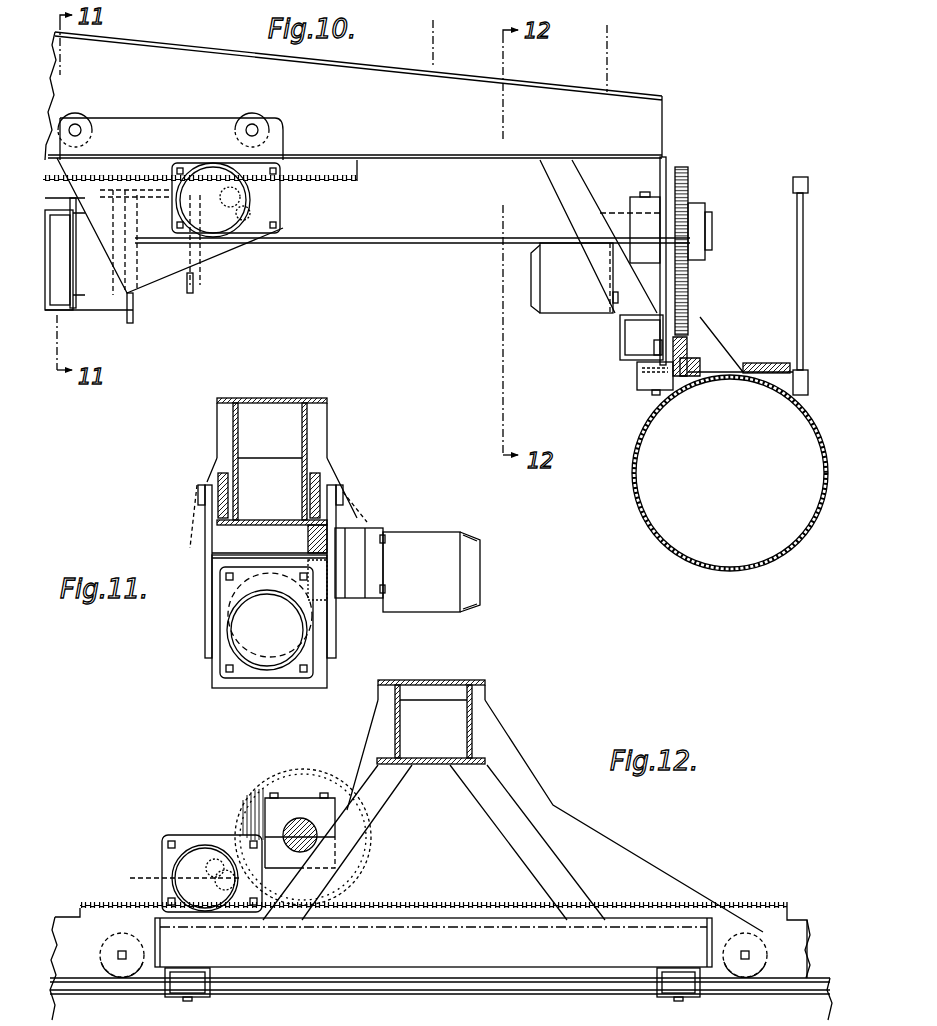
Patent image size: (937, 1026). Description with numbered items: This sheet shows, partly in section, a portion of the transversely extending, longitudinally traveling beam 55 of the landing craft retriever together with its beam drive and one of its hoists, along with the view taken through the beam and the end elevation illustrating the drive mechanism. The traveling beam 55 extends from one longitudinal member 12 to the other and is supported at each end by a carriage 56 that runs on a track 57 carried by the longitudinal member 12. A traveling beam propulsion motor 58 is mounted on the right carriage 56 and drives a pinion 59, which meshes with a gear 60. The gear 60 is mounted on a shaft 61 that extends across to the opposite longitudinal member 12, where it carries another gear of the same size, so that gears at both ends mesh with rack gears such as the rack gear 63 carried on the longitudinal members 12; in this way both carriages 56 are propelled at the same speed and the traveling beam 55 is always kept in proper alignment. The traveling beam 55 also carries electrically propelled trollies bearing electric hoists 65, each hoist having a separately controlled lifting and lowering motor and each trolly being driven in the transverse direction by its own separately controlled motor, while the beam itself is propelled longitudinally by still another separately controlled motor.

In FIG. 10, the longitudinal member 12 is at (634, 468).
In FIG. 12, the longitudinal member 12 is at (806, 933).
In FIG. 10, the traveling beam 55 is at (395, 88).
In FIG. 11, the traveling beam 55 is at (280, 398).
In FIG. 12, the traveling beam 55 is at (440, 680).
In FIG. 10, the carriage 56 is at (670, 155).
In FIG. 12, the carriage 56 is at (652, 838).
In FIG. 10, the track 57 is at (681, 384).
In FIG. 12, the track 57 is at (130, 983).
In FIG. 10, the traveling beam propulsion motor 58 is at (580, 303).
In FIG. 12, the traveling beam propulsion motor 58 is at (197, 860).
In FIG. 10, the pinion 59 is at (640, 325).
In FIG. 12, the pinion 59 is at (170, 873).
In FIG. 10, the gear 60 is at (689, 180).
In FIG. 12, the gear 60 is at (246, 795).
In FIG. 10, the shaft 61 is at (488, 240).
In FIG. 12, the shaft 61 is at (306, 820).
In FIG. 10, the rack gear 63 is at (672, 330).
In FIG. 12, the rack gear 63 is at (97, 900).
In FIG. 10, the electric hoist 65 is at (195, 272).
In FIG. 11, the electric hoist 65 is at (205, 595).